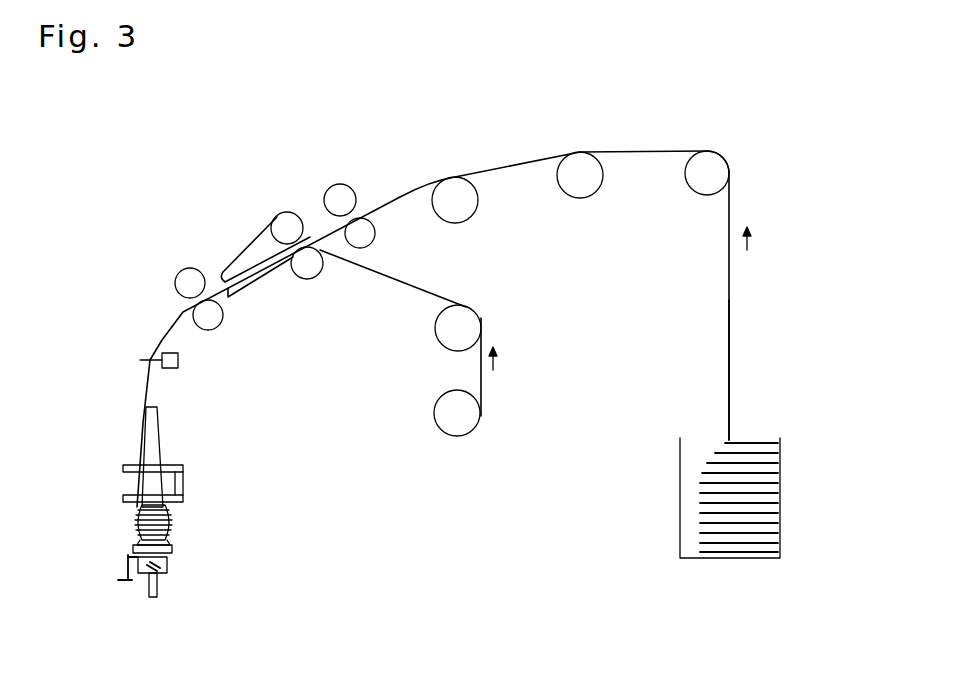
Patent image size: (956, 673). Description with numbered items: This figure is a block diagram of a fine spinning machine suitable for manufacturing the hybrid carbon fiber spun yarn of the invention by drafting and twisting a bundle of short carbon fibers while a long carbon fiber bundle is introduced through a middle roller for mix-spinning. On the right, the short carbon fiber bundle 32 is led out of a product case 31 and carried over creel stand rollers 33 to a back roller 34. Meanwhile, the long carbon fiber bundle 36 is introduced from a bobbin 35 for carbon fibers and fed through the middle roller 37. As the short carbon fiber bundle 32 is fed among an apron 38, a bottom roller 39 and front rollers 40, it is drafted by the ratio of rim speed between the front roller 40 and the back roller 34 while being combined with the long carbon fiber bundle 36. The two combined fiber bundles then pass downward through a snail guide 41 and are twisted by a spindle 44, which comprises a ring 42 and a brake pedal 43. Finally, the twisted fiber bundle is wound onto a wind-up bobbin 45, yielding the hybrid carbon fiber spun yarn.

The product case 31 is at (735, 560).
The short carbon fiber bundle 32 is at (732, 343).
The creel stand rollers 33 is at (582, 150).
The back roller 34 is at (378, 237).
The bobbin 35 is at (470, 432).
The long carbon fiber bundle 36 is at (482, 378).
The middle roller 37 is at (320, 273).
The apron 38 is at (245, 245).
The bottom roller 39 is at (277, 285).
The front rollers 40 is at (180, 270).
The snail guide 41 is at (179, 361).
The ring 42 is at (184, 487).
The brake pedal 43 is at (118, 580).
The spindle 44 is at (163, 425).
The wind-up bobbin 45 is at (133, 525).